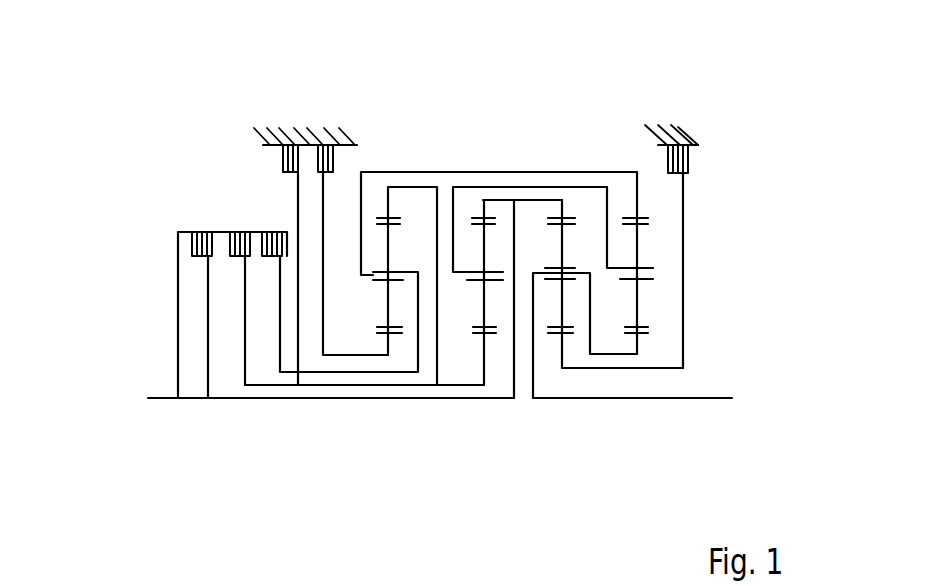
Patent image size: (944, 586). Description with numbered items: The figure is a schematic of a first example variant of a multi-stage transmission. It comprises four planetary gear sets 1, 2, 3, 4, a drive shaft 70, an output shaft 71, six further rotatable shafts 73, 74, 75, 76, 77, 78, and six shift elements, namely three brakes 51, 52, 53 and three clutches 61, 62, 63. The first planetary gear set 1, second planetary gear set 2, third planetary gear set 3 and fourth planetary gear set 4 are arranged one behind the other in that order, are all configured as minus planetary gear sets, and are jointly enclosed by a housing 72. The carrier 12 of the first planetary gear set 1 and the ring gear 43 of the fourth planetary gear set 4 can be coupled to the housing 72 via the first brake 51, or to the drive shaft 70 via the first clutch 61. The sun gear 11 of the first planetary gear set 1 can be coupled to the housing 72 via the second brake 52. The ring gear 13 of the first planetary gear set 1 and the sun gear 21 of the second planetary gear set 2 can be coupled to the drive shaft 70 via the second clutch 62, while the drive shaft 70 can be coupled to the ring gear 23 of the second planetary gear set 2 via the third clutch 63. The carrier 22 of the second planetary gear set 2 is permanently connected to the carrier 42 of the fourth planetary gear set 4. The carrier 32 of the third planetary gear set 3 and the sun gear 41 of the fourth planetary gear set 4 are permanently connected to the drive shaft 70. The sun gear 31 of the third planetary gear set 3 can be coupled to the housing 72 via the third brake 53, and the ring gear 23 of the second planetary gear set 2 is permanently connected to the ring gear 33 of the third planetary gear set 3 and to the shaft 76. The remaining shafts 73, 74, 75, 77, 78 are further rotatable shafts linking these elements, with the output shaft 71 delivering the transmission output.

The first planetary gear set 1 is at (393, 421).
The second planetary gear set 2 is at (489, 421).
The third planetary gear set 3 is at (566, 421).
The fourth planetary gear set 4 is at (641, 421).
The sun gear 11 is at (373, 282).
The carrier 12 is at (377, 333).
The ring gear 13 is at (383, 217).
The sun gear 21 is at (490, 337).
The carrier 22 is at (467, 282).
The ring gear 23 is at (478, 215).
The sun gear 31 is at (553, 333).
The carrier 32 is at (578, 280).
The ring gear 33 is at (562, 217).
The sun gear 41 is at (642, 333).
The carrier 42 is at (615, 271).
The ring gear 43 is at (623, 217).
The first brake 51 is at (276, 162).
The second brake 52 is at (346, 150).
The third brake 53 is at (692, 158).
The first clutch 61 is at (258, 233).
The second clutch 62 is at (223, 233).
The third clutch 63 is at (187, 248).
The drive shaft 70 is at (163, 398).
The output shaft 71 is at (687, 398).
The housing 72 is at (297, 137).
The shaft 73 is at (427, 172).
The shaft 74 is at (523, 187).
The shaft 75 is at (683, 292).
The shaft 76 is at (208, 399).
The shaft 77 is at (258, 385).
The shaft 78 is at (322, 328).